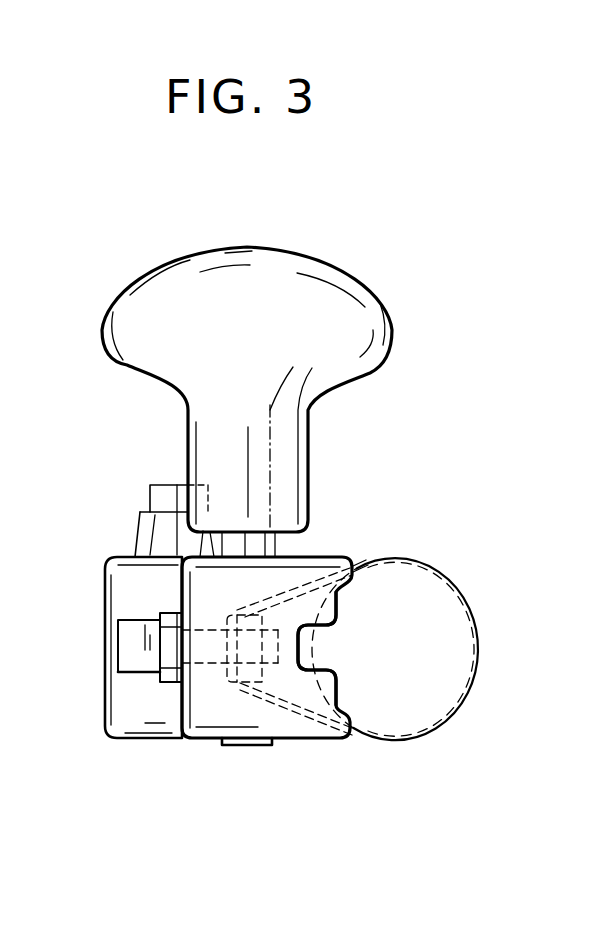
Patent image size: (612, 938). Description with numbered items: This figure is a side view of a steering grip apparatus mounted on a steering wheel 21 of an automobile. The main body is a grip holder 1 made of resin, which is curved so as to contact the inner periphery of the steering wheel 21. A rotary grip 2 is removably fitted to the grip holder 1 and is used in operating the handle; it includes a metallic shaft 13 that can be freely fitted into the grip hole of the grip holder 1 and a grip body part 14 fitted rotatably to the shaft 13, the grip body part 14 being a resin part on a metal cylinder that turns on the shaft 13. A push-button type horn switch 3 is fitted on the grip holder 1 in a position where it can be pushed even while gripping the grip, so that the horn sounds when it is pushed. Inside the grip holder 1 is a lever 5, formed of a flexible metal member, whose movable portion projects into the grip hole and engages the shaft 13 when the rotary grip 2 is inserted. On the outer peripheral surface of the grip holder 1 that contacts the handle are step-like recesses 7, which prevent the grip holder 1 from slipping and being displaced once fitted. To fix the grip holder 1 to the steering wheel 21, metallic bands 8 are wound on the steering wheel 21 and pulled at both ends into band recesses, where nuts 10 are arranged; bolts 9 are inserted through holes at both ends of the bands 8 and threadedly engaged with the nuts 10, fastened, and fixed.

The grip holder 1 is at (323, 557).
The rotary grip 2 is at (395, 296).
The horn switch 3 is at (150, 492).
The lever 5 is at (128, 650).
The step-like recesses 7 is at (333, 693).
The metallic bands 8 is at (312, 713).
The bolts 9 is at (163, 652).
The nuts 10 is at (265, 678).
The shaft 13 is at (277, 547).
The grip body part 14 is at (375, 350).
The steering wheel 21 is at (437, 593).